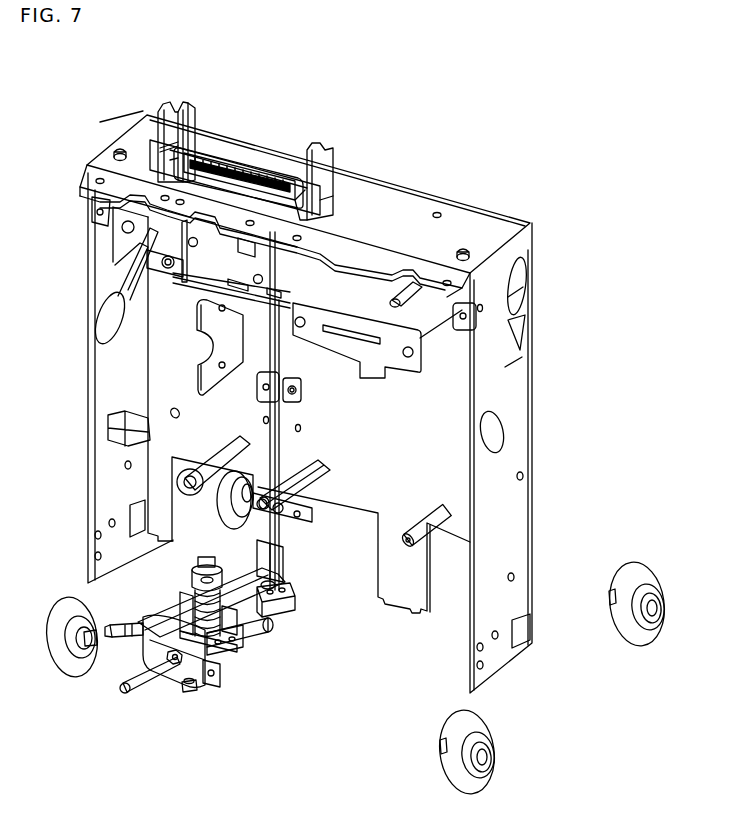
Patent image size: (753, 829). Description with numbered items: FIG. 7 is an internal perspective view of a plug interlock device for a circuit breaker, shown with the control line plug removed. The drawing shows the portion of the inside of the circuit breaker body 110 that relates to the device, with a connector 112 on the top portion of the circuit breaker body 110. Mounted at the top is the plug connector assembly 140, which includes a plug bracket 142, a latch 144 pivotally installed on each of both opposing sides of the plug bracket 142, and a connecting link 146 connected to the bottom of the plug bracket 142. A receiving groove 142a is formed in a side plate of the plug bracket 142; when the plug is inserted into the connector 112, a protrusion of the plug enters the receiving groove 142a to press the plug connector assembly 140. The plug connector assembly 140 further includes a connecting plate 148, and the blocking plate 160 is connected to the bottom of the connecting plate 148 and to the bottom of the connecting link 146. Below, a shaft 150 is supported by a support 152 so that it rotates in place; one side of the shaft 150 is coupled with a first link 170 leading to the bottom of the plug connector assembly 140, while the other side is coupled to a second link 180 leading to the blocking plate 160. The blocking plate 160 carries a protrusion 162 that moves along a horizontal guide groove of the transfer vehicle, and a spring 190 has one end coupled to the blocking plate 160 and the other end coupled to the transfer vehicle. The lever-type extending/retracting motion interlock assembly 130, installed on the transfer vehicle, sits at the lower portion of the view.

The circuit breaker body 110 is at (537, 540).
The connector 112 is at (217, 177).
The lever-type extending/retracting motion interlock assembly 130 is at (196, 662).
The plug connector assembly 140 is at (337, 148).
The plug bracket 142 is at (277, 150).
The receiving groove 142a is at (163, 117).
The latch 144 is at (183, 120).
The connecting link 146 is at (273, 423).
The connecting plate 148 is at (280, 580).
The shaft 150 is at (250, 637).
The support 152 is at (270, 625).
The blocking plate 160 is at (182, 668).
The protrusion 162 is at (170, 663).
The first link 170 is at (290, 607).
The second link 180 is at (205, 683).
The spring 190 is at (153, 613).